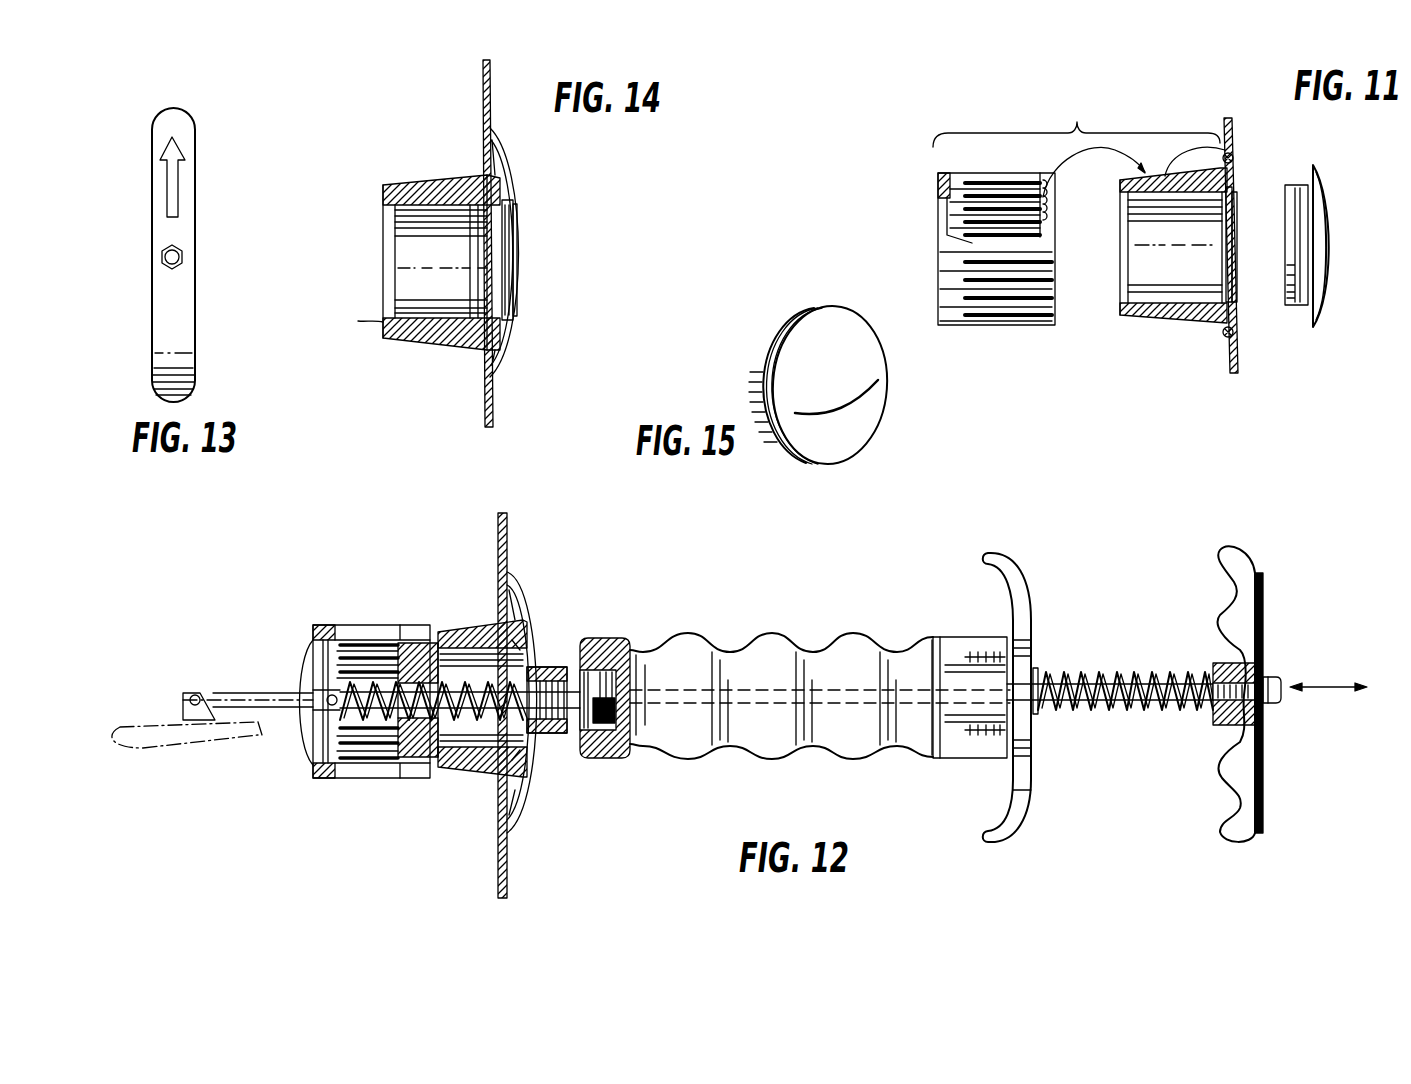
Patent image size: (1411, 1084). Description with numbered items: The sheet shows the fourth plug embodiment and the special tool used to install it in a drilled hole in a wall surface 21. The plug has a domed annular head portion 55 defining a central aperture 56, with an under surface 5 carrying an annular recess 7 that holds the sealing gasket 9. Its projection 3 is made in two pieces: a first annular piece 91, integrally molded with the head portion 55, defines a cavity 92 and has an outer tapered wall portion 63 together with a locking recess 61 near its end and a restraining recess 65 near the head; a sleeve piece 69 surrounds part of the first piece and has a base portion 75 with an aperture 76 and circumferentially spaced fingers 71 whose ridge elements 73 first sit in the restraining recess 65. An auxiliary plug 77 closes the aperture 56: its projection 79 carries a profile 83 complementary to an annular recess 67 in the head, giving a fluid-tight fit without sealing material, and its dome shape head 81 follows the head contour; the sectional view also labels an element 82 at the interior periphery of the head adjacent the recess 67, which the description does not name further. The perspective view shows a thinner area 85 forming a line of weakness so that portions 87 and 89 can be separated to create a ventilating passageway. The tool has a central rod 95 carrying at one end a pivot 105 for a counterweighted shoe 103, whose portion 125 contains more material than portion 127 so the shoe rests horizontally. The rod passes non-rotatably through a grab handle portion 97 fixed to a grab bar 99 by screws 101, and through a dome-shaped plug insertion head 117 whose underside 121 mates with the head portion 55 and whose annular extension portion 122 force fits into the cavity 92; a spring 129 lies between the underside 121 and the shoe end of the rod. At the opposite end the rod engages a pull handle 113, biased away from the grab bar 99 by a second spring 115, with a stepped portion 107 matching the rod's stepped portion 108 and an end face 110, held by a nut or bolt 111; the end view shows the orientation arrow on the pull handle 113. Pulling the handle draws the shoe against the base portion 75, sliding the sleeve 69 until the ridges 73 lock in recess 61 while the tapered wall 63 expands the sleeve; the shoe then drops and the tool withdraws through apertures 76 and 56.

In FIG. 11, the projection 3 is at (1077, 122).
In FIG. 11, the under surface 5 is at (1224, 336).
In FIG. 11, the annular recess 7 is at (1232, 170).
In FIG. 11, the sealing gasket 9 is at (1222, 158).
In FIG. 12, the wall surface 21 is at (508, 542).
In FIG. 14, the annular head portion 55 is at (498, 378).
In FIG. 11, the annular head portion 55 is at (1237, 368).
In FIG. 12, the annular head portion 55 is at (528, 600).
In FIG. 11, the central aperture 56 is at (1238, 300).
In FIG. 11, the locking recess 61 is at (1222, 150).
In FIG. 11, the tapered wall portion 63 is at (1160, 175).
In FIG. 11, the restraining recess 65 is at (1145, 312).
In FIG. 11, the annular recess 67 is at (1236, 203).
In FIG. 11, the sleeve piece 69 is at (952, 307).
In FIG. 11, the fingers 71 is at (1010, 312).
In FIG. 12, the fingers 71 is at (341, 614).
In FIG. 11, the ridge element 73 is at (1050, 232).
In FIG. 14, the base portion 75 is at (361, 318).
In FIG. 11, the base portion 75 is at (948, 260).
In FIG. 14, the aperture 76 is at (383, 263).
In FIG. 11, the aperture 76 is at (938, 212).
In FIG. 12, the aperture 76 is at (388, 608).
In FIG. 14, the auxiliary plug 77 is at (512, 265).
In FIG. 15, the auxiliary plug 77 is at (770, 346).
In FIG. 11, the auxiliary plug 77 is at (1318, 320).
In FIG. 11, the projection 79 is at (1290, 187).
In FIG. 15, the dome shape head 81 is at (826, 328).
In FIG. 11, the dome shape head 81 is at (1328, 255).
In FIG. 11, the gasket seat 82 is at (1226, 288).
In FIG. 11, the profile 83 is at (1300, 305).
In FIG. 15, the area 85 is at (850, 405).
In FIG. 15, the head portion 87 is at (873, 362).
In FIG. 15, the head portion 89 is at (838, 440).
In FIG. 11, the first annular piece 91 is at (1172, 318).
In FIG. 11, the cavity 92 is at (1138, 260).
In FIG. 12, the central rod 95 is at (248, 691).
In FIG. 12, the grab handle portion 97 is at (817, 642).
In FIG. 12, the grab bar 99 is at (1032, 600).
In FIG. 12, the screws 101 is at (1037, 728).
In FIG. 12, the counterweighted shoe 103 is at (170, 748).
In FIG. 12, the pivot 105 is at (196, 694).
In FIG. 12, the stepped portion 107 is at (1262, 660).
In FIG. 12, the stepped portion 108 is at (1218, 720).
In FIG. 12, the end face 110 is at (1215, 668).
In FIG. 13, the nut or bolt 111 is at (185, 253).
In FIG. 12, the nut or bolt 111 is at (1280, 705).
In FIG. 13, the pull handle 113 is at (180, 330).
In FIG. 12, the pull handle 113 is at (1260, 790).
In FIG. 12, the second spring 115 is at (1132, 712).
In FIG. 12, the dome-shaped plug insertion head 117 is at (547, 735).
In FIG. 12, the underside 121 is at (525, 805).
In FIG. 12, the annular extension portion 122 is at (470, 634).
In FIG. 12, the portion 125 is at (130, 720).
In FIG. 12, the portion 127 is at (258, 737).
In FIG. 12, the spring 129 is at (502, 722).